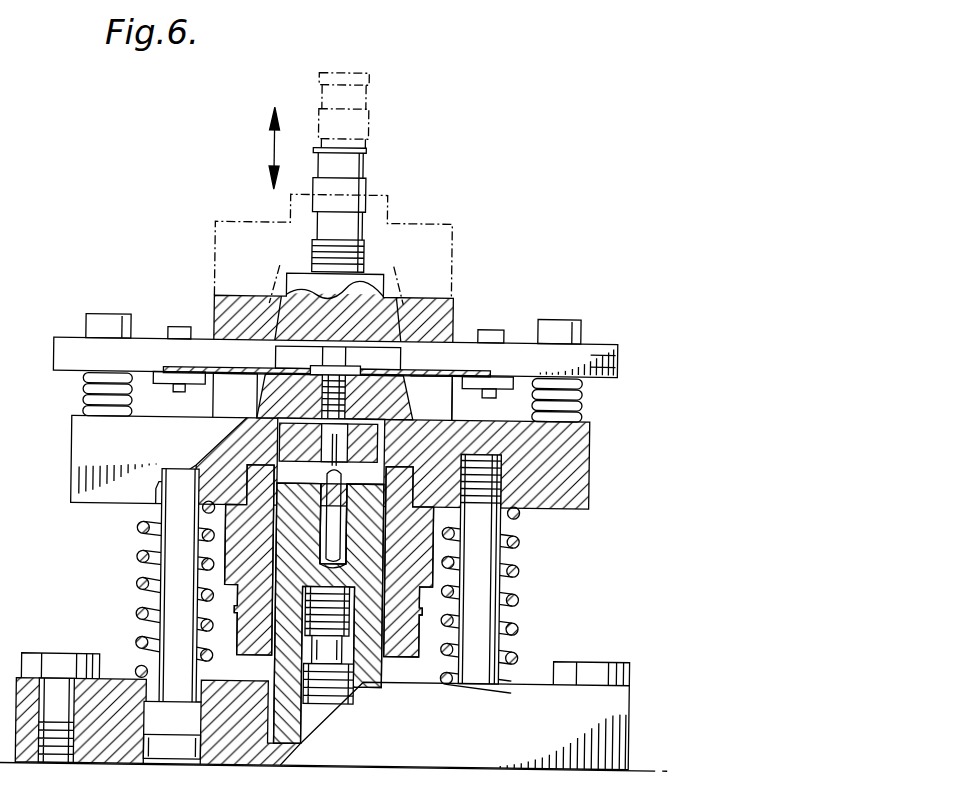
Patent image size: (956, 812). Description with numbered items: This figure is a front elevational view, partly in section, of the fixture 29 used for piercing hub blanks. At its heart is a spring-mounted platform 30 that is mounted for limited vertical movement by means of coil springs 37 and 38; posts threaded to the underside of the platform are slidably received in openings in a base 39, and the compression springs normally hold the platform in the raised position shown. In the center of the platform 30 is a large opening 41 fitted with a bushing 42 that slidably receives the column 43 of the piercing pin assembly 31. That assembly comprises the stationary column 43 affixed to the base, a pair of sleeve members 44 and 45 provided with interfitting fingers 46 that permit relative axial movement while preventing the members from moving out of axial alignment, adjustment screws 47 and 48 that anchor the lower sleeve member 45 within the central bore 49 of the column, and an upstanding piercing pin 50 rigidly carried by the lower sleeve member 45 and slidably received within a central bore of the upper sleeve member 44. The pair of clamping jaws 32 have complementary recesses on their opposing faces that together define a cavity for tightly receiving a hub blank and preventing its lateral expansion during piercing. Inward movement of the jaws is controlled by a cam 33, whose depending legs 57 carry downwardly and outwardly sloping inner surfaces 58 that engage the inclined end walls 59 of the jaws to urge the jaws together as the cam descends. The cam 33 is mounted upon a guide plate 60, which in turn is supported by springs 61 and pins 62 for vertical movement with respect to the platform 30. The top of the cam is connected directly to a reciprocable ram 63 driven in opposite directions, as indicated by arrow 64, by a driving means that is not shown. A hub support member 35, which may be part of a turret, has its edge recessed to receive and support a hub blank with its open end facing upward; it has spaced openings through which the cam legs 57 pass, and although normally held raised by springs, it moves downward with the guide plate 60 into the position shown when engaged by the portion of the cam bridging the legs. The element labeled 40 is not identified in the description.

The fixture 29 is at (617, 357).
The spring-mounted platform 30 is at (592, 487).
The piercing pin assembly 31 is at (350, 506).
The clamping jaws 32 is at (258, 400).
The cam 33 is at (453, 313).
The hub support member 35 is at (163, 365).
The coil spring 37 is at (520, 571).
The coil spring 38 is at (502, 520).
The base 39 is at (104, 763).
The stud 40 is at (205, 710).
The large opening 41 is at (213, 465).
The bushing 42 is at (412, 627).
The column 43 is at (248, 624).
The upper sleeve member 44 is at (322, 490).
The lower sleeve member 45 is at (320, 556).
The interfitting fingers 46 is at (320, 508).
The adjustment screw 47 is at (310, 612).
The adjustment screw 48 is at (327, 702).
The central bore 49 is at (342, 564).
The piercing pin 50 is at (358, 440).
The depending legs 57 is at (213, 388).
The sloping inner surfaces 58 is at (385, 352).
The inclined end walls 59 is at (346, 394).
The guide plate 60 is at (600, 345).
The springs 61 is at (583, 405).
The pins 62 is at (582, 315).
The reciprocable ram 63 is at (362, 167).
The arrow 64 is at (312, 116).